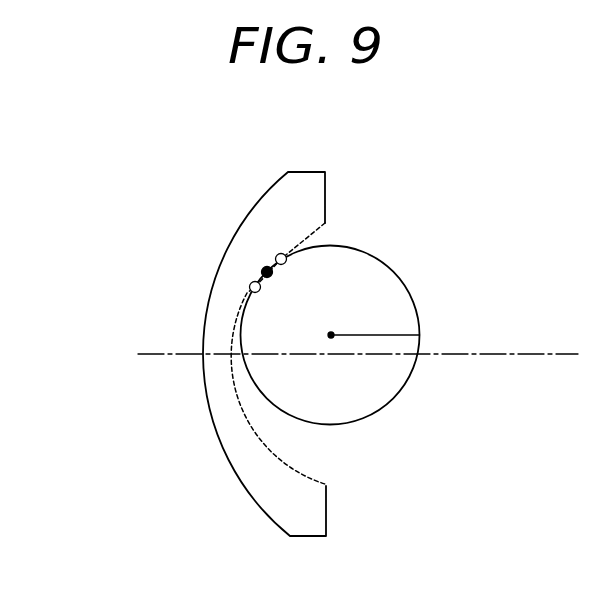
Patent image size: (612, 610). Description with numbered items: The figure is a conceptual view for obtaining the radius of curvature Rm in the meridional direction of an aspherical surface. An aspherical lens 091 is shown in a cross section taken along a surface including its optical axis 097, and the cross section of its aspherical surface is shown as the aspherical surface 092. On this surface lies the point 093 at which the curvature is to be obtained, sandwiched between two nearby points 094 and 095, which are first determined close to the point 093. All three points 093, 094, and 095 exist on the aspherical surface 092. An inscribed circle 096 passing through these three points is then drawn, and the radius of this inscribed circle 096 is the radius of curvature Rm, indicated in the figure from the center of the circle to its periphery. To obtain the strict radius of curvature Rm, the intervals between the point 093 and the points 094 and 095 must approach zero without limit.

The aspherical lens 091 is at (308, 172).
The aspherical surface 092 is at (312, 233).
The point 093 is at (262, 267).
The point 094 is at (277, 255).
The point 095 is at (250, 290).
The inscribed circle 096 is at (395, 398).
The optical axis 097 is at (547, 353).